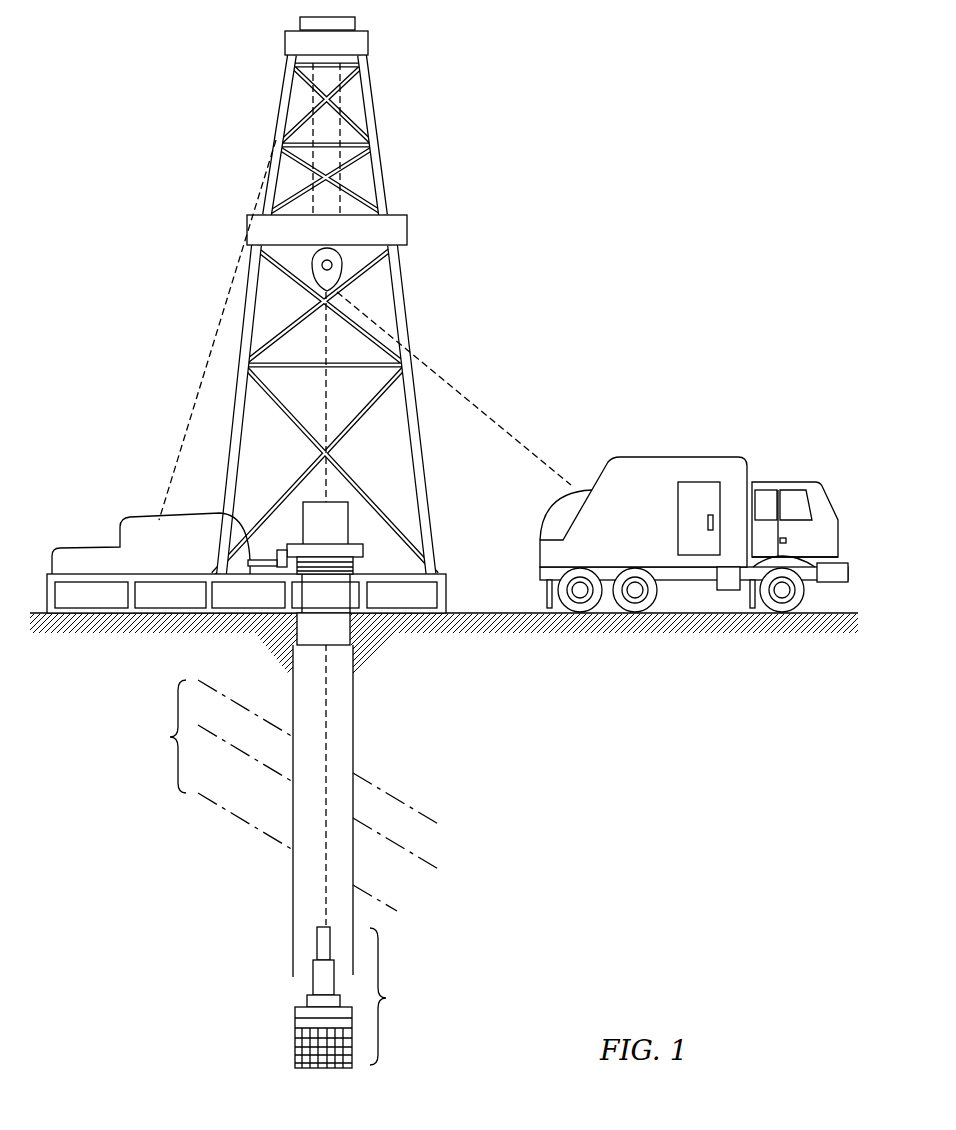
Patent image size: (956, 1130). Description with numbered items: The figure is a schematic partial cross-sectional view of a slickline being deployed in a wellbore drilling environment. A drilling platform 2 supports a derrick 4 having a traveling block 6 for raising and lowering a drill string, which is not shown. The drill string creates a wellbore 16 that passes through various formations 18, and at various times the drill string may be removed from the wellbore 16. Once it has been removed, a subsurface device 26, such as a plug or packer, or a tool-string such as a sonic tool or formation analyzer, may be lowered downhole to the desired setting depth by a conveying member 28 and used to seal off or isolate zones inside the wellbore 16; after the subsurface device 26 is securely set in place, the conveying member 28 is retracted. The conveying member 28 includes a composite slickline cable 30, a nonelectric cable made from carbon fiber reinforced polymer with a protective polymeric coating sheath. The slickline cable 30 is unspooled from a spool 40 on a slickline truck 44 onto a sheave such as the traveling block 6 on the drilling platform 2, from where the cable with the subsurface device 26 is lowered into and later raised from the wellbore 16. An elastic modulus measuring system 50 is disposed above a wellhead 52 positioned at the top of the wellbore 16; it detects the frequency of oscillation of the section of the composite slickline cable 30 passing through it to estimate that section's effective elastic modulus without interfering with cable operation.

The drilling platform 2 is at (447, 577).
The derrick 4 is at (418, 420).
The traveling block 6 is at (344, 265).
The wellbore 16 is at (353, 745).
The formations 18 is at (170, 737).
The subsurface device 26 is at (388, 998).
The conveying member 28 is at (520, 370).
The composite slickline cable 30 is at (503, 425).
The spool 40 is at (588, 490).
The slickline truck 44 is at (667, 457).
The elastic modulus measuring system 50 is at (350, 518).
The wellhead 52 is at (365, 548).